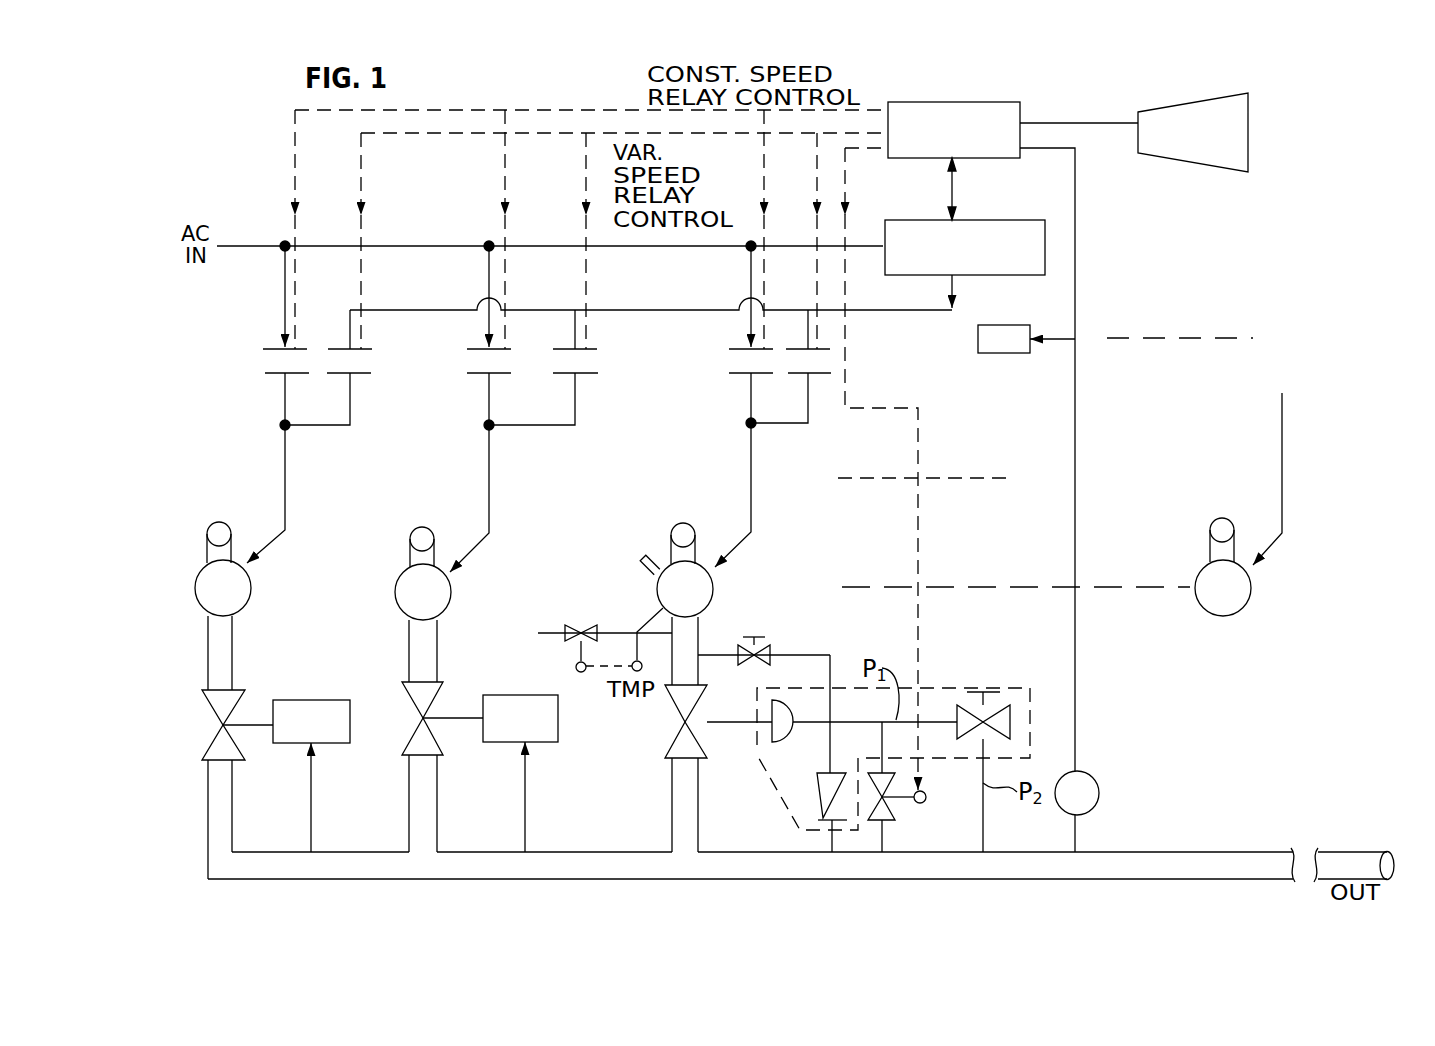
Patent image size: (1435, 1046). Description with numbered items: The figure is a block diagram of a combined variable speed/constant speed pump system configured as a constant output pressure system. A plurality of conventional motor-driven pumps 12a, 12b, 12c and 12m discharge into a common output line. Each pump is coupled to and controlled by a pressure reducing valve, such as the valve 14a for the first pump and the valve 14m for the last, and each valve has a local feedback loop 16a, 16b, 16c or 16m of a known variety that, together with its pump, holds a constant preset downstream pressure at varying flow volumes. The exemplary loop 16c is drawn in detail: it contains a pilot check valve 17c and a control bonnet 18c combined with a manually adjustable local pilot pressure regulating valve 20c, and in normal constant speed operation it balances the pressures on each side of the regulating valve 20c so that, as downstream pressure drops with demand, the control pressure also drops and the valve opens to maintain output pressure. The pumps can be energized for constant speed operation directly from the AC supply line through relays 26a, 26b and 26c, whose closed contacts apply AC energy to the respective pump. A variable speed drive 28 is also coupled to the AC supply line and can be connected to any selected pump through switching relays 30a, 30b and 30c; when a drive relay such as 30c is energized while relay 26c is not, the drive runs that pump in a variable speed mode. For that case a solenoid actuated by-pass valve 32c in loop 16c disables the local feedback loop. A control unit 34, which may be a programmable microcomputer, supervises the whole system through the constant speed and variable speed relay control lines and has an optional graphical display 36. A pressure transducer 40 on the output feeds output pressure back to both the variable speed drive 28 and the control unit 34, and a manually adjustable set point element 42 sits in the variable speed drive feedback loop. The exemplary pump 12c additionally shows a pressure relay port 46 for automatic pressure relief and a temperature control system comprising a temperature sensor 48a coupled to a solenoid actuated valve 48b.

The pump 12a is at (202, 588).
The pump 12b is at (397, 590).
The pump 12c is at (660, 590).
The pump 12m is at (1210, 578).
The pressure reducing valve 14a is at (222, 724).
The pressure reducing valve 14m is at (1239, 764).
The local feedback loop 16a is at (327, 700).
The local feedback loop 16b is at (527, 695).
The local feedback loop 16c is at (778, 807).
The local feedback loop 16m is at (1348, 840).
The pilot check valve 17c is at (822, 807).
The control bonnet 18c is at (772, 711).
The local pilot pressure regulating valve 20c is at (1013, 713).
The relay 26a is at (279, 347).
The relay 26b is at (472, 347).
The relay 26c is at (733, 347).
The variable speed drive 28 is at (995, 220).
The relay 30a is at (362, 375).
The relay 30b is at (590, 375).
The relay 30c is at (820, 374).
The solenoid actuated by-pass valve 32c is at (897, 815).
The control unit 34 is at (990, 103).
The graphical display 36 is at (1148, 112).
The pressure transducer 40 is at (1099, 789).
The set point element 42 is at (978, 338).
The pressure relay port 46 is at (655, 562).
The temperature sensor 48a is at (636, 662).
The solenoid actuated valve 48b is at (578, 664).